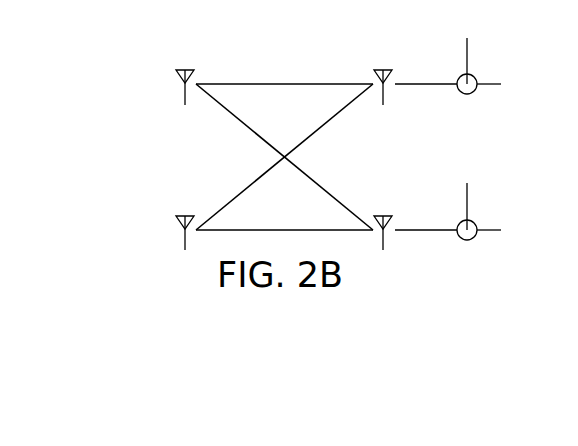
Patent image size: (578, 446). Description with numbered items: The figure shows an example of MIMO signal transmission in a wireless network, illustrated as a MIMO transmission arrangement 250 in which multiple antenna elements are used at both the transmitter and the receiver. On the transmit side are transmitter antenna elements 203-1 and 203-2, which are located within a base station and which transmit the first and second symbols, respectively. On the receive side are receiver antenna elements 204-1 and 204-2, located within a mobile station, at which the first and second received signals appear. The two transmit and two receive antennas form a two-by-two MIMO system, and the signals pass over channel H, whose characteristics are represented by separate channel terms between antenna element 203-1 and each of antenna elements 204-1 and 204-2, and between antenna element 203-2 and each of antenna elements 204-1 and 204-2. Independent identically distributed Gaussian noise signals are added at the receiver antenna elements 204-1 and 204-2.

The MIMO transmission arrangement 250 is at (118, 126).
The transmitter antenna element 203-1 is at (181, 67).
The transmitter antenna element 203-2 is at (181, 213).
The receiver antenna element 204-1 is at (386, 67).
The receiver antenna element 204-2 is at (386, 213).